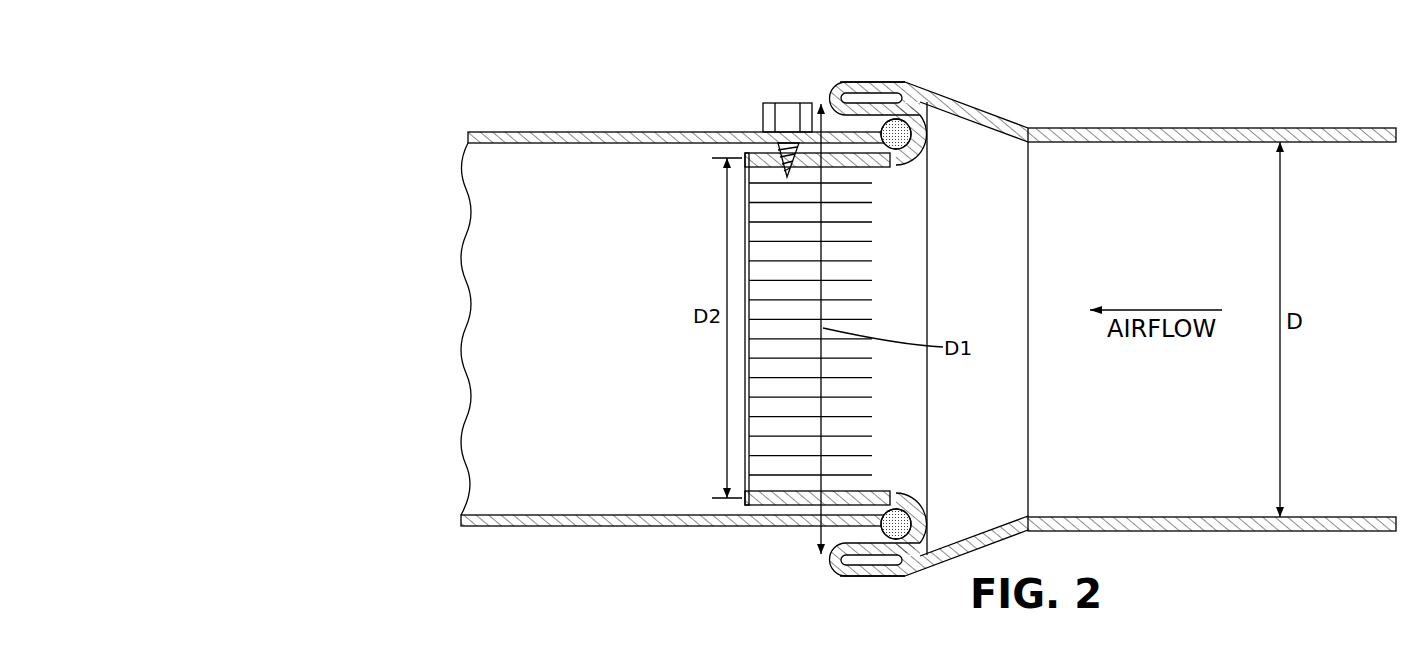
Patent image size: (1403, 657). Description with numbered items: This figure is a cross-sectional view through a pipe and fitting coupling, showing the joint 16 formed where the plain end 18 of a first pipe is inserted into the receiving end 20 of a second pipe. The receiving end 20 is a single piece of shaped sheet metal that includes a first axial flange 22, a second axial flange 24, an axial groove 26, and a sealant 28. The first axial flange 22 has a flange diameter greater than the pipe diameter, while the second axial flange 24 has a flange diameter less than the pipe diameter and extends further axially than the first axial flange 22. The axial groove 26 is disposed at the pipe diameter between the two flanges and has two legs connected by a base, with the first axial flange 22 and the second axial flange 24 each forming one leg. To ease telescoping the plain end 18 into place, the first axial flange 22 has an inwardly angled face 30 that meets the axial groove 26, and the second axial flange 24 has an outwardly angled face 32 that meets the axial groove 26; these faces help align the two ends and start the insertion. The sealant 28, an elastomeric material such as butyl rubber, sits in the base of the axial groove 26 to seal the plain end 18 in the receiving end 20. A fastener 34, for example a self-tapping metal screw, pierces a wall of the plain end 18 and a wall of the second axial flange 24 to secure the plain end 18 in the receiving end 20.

The joint 16 is at (851, 64).
The plain end 18 is at (728, 120).
The receiving end 20 is at (966, 74).
The first axial flange 22 is at (833, 90).
The second axial flange 24 is at (713, 160).
The axial groove 26 is at (931, 138).
The sealant 28 is at (904, 112).
The inwardly angled face 30 is at (892, 122).
The outwardly angled face 32 is at (865, 170).
The fastener 34 is at (766, 102).